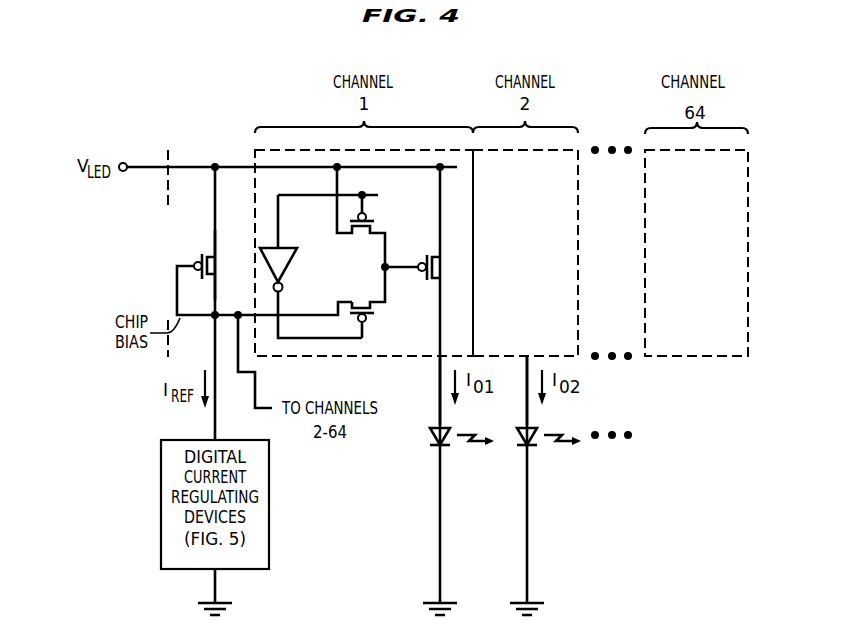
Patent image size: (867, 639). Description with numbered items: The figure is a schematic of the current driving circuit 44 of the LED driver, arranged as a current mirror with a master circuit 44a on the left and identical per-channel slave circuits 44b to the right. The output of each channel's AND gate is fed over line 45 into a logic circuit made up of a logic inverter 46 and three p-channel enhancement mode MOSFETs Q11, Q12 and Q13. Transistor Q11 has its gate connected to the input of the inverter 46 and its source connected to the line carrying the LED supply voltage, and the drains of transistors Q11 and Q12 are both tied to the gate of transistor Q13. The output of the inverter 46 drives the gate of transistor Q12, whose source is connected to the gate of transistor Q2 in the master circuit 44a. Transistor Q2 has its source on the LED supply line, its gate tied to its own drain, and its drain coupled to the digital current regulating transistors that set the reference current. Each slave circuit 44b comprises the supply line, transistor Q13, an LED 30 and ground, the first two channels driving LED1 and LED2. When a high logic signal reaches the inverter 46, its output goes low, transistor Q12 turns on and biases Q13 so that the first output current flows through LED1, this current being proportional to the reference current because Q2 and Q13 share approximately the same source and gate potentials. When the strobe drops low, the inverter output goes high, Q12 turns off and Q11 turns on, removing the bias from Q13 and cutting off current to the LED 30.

The LED 30 is at (431, 430).
The current driving circuit 44 is at (269, 104).
The master circuit 44a is at (181, 247).
The slave circuit 44b is at (428, 334).
The line 45 is at (367, 194).
The logic inverter 46 is at (289, 247).
The transistor Q2 is at (218, 266).
The transistor Q11 is at (370, 217).
The transistor Q12 is at (376, 302).
The transistor Q13 is at (425, 267).
The LED of the first channel LED1 is at (444, 447).
The LED of the second channel LED2 is at (531, 447).